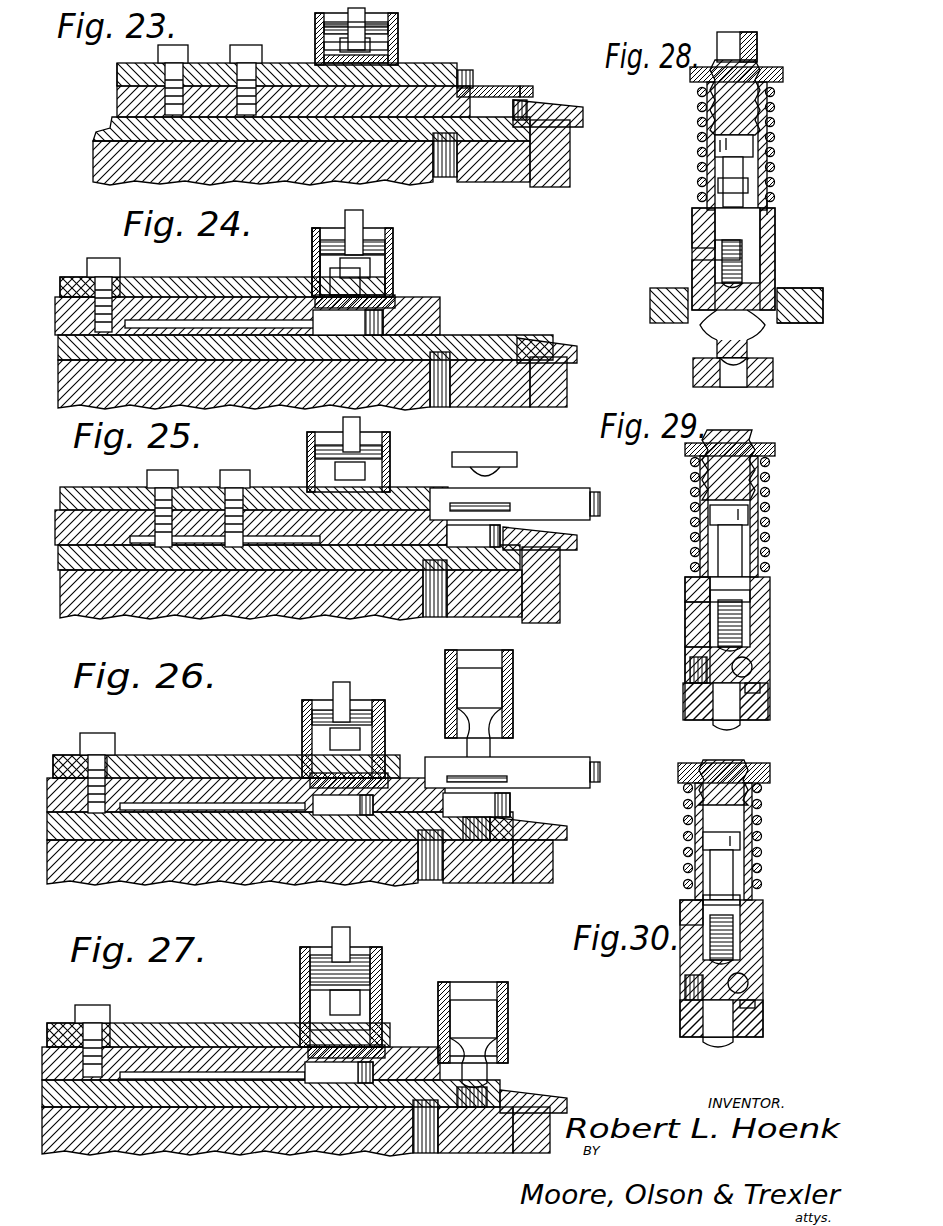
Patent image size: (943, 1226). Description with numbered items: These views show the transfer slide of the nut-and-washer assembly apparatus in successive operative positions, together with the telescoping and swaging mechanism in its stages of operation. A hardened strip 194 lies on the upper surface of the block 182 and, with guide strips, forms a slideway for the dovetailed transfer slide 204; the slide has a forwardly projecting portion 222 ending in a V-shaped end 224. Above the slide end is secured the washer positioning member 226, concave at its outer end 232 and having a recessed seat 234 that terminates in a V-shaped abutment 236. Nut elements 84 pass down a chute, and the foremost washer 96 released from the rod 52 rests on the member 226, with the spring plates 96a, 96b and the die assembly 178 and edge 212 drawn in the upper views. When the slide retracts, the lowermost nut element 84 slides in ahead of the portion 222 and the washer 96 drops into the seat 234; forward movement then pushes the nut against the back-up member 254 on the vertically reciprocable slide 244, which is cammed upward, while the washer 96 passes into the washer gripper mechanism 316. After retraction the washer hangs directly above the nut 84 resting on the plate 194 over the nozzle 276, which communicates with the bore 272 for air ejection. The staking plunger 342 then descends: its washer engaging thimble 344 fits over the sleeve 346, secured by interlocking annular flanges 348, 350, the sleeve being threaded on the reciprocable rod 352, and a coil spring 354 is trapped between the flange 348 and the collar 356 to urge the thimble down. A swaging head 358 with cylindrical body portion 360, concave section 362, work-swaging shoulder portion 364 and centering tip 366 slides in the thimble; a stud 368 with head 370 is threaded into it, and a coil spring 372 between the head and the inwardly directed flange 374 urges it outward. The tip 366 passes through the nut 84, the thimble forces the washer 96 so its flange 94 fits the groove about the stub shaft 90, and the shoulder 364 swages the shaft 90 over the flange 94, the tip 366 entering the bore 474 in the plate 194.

In FIG. 23, the rod 52 is at (348, 16).
In FIG. 24, the rod 52 is at (362, 218).
In FIG. 25, the rod 52 is at (360, 428).
In FIG. 26, the rod 52 is at (342, 690).
In FIG. 27, the rod 52 is at (350, 930).
In FIG. 24, the nut element 84 is at (385, 322).
In FIG. 25, the nut element 84 is at (505, 508).
In FIG. 26, the nut element 84 is at (345, 815).
In FIG. 27, the nut element 84 is at (375, 1070).
In FIG. 28, the nut element 84 is at (818, 366).
In FIG. 29, the nut element 84 is at (818, 705).
In FIG. 30, the nut element 84 is at (818, 1008).
In FIG. 29, the stub shaft 90 is at (755, 667).
In FIG. 30, the stub shaft 90 is at (752, 993).
In FIG. 29, the flange 94 is at (700, 675).
In FIG. 24, the washer 96 is at (320, 258).
In FIG. 25, the washer 96 is at (487, 470).
In FIG. 26, the washer 96 is at (505, 762).
In FIG. 27, the washer 96 is at (375, 1012).
In FIG. 28, the washer 96 is at (823, 298).
In FIG. 29, the washer 96 is at (765, 690).
In FIG. 30, the washer 96 is at (688, 1008).
In FIG. 23, the spring plate 96a is at (330, 45).
In FIG. 24, the spring plate 96a is at (395, 285).
In FIG. 23, the upper spring plate 96b is at (324, 28).
In FIG. 23, the die assembly 178 is at (400, 28).
In FIG. 24, the die assembly 178 is at (396, 245).
In FIG. 25, the die assembly 178 is at (392, 449).
In FIG. 26, the die assembly 178 is at (385, 703).
In FIG. 27, the die assembly 178 is at (385, 950).
In FIG. 23, the block 182 is at (100, 150).
In FIG. 23, the hardened strip 194 is at (112, 133).
In FIG. 24, the hardened strip 194 is at (405, 340).
In FIG. 25, the hardened strip 194 is at (243, 560).
In FIG. 26, the hardened strip 194 is at (147, 820).
In FIG. 27, the hardened strip 194 is at (150, 1095).
In FIG. 23, the transfer slide 204 is at (212, 62).
In FIG. 24, the transfer slide 204 is at (75, 280).
In FIG. 26, the transfer slide 204 is at (68, 760).
In FIG. 27, the transfer slide 204 is at (62, 1020).
In FIG. 23, the clamp edge 212 is at (118, 77).
In FIG. 23, the forwardly projecting portion 222 is at (405, 105).
In FIG. 24, the forwardly projecting portion 222 is at (295, 297).
In FIG. 25, the forwardly projecting portion 222 is at (385, 540).
In FIG. 26, the forwardly projecting portion 222 is at (300, 820).
In FIG. 23, the V-shaped end 224 is at (528, 106).
In FIG. 23, the washer positioning member 226 is at (418, 70).
In FIG. 24, the washer positioning member 226 is at (235, 288).
In FIG. 25, the washer positioning member 226 is at (288, 487).
In FIG. 26, the washer positioning member 226 is at (205, 757).
In FIG. 27, the washer positioning member 226 is at (200, 1025).
In FIG. 23, the concave outer end 232 is at (532, 90).
In FIG. 23, the recessed seat 234 is at (515, 88).
In FIG. 24, the recessed seat 234 is at (398, 298).
In FIG. 26, the recessed seat 234 is at (390, 780).
In FIG. 23, the V-shaped abutment 236 is at (470, 72).
In FIG. 24, the V-shaped abutment 236 is at (316, 228).
In FIG. 23, the vertically reciprocable slide 244 is at (548, 178).
In FIG. 24, the vertically reciprocable slide 244 is at (552, 405).
In FIG. 25, the vertically reciprocable slide 244 is at (560, 578).
In FIG. 26, the vertically reciprocable slide 244 is at (553, 860).
In FIG. 27, the vertically reciprocable slide 244 is at (522, 1145).
In FIG. 23, the back-up member 254 is at (584, 113).
In FIG. 24, the back-up member 254 is at (548, 338).
In FIG. 25, the back-up member 254 is at (578, 542).
In FIG. 26, the back-up member 254 is at (540, 822).
In FIG. 27, the back-up member 254 is at (568, 1103).
In FIG. 23, the bore 272 is at (445, 178).
In FIG. 24, the bore 272 is at (442, 400).
In FIG. 25, the bore 272 is at (440, 618).
In FIG. 26, the bore 272 is at (433, 882).
In FIG. 27, the bore 272 is at (422, 1150).
In FIG. 23, the nozzle 276 is at (500, 183).
In FIG. 24, the nozzle 276 is at (490, 383).
In FIG. 25, the nozzle 276 is at (412, 610).
In FIG. 26, the nozzle 276 is at (478, 848).
In FIG. 27, the nozzle 276 is at (452, 1152).
In FIG. 26, the washer gripper mechanism 316 is at (560, 768).
In FIG. 28, the washer gripper mechanism 316 is at (805, 315).
In FIG. 26, the staking plunger 342 is at (522, 692).
In FIG. 27, the staking plunger 342 is at (517, 1023).
In FIG. 28, the staking plunger 342 is at (771, 257).
In FIG. 29, the staking plunger 342 is at (765, 630).
In FIG. 30, the staking plunger 342 is at (754, 952).
In FIG. 28, the washer engaging thimble 344 is at (776, 252).
In FIG. 29, the washer engaging thimble 344 is at (772, 610).
In FIG. 30, the washer engaging thimble 344 is at (823, 944).
In FIG. 28, the sleeve 346 is at (766, 130).
In FIG. 29, the sleeve 346 is at (762, 532).
In FIG. 30, the sleeve 346 is at (755, 836).
In FIG. 28, the annular flange 348 is at (693, 226).
In FIG. 29, the annular flange 348 is at (688, 582).
In FIG. 30, the annular flange 348 is at (683, 900).
In FIG. 28, the annular flange 350 is at (722, 254).
In FIG. 29, the annular flange 350 is at (715, 604).
In FIG. 30, the annular flange 350 is at (690, 905).
In FIG. 28, the reciprocable rod 352 is at (742, 38).
In FIG. 29, the reciprocable rod 352 is at (756, 450).
In FIG. 30, the reciprocable rod 352 is at (752, 772).
In FIG. 28, the coil spring 354 is at (700, 120).
In FIG. 30, the coil spring 354 is at (813, 796).
In FIG. 28, the collar 356 is at (775, 70).
In FIG. 28, the swaging head 358 is at (773, 287).
In FIG. 29, the swaging head 358 is at (712, 631).
In FIG. 28, the cylindrical body portion 360 is at (710, 274).
In FIG. 29, the cylindrical body portion 360 is at (700, 660).
In FIG. 28, the concave section 362 is at (712, 332).
In FIG. 28, the work-swaging shoulder portion 364 is at (752, 335).
In FIG. 30, the work-swaging shoulder portion 364 is at (705, 992).
In FIG. 28, the centering tip 366 is at (712, 355).
In FIG. 28, the stud 368 is at (760, 165).
In FIG. 28, the head 370 is at (722, 158).
In FIG. 29, the head 370 is at (720, 512).
In FIG. 28, the coil spring 372 is at (770, 216).
In FIG. 28, the inwardly directed flange 374 is at (718, 182).
In FIG. 26, the bore 474 is at (480, 842).
In FIG. 27, the bore 474 is at (490, 1100).